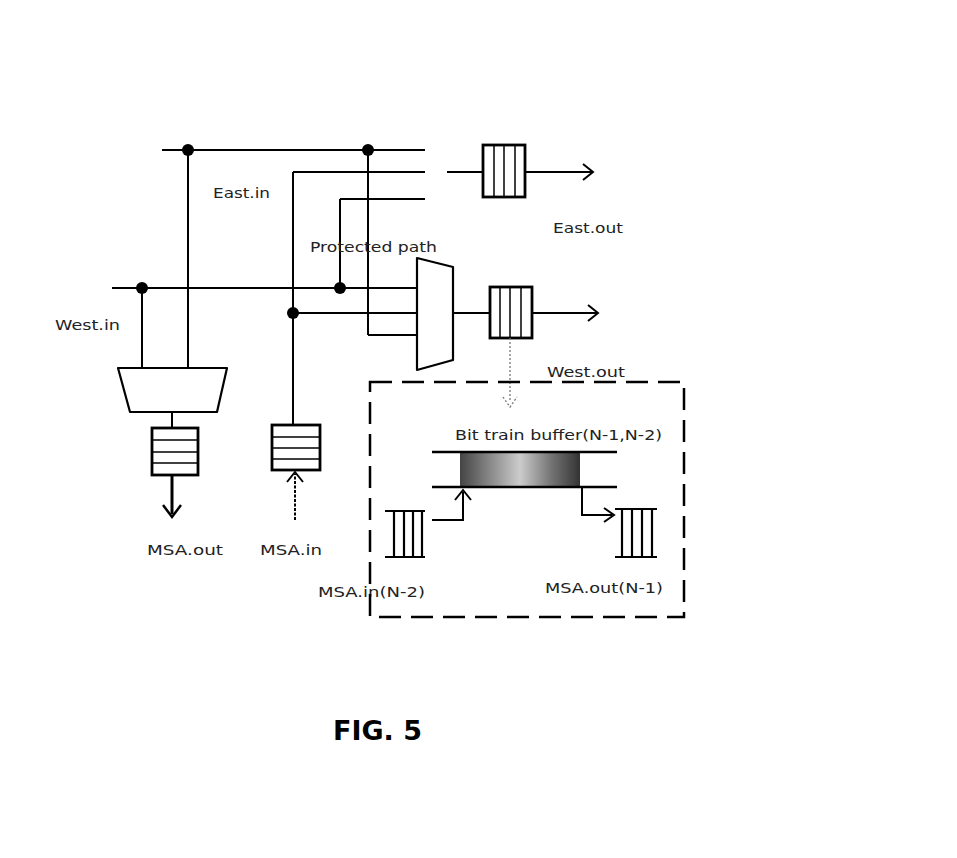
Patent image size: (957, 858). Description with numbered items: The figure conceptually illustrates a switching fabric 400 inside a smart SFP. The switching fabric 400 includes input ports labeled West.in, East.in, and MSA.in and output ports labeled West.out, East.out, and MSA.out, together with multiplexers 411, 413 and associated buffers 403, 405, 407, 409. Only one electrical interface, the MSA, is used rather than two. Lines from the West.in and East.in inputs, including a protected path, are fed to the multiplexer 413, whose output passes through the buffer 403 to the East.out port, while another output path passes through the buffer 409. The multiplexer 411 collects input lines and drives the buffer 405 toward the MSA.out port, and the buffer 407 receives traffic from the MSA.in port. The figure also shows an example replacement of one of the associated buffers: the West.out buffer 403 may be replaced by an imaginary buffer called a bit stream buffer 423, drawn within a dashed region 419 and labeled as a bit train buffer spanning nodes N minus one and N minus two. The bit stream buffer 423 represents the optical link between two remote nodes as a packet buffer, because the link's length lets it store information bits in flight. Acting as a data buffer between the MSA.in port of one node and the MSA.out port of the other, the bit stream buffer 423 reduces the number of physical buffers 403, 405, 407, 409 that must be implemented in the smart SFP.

The switching fabric 400 is at (645, 97).
The West.out buffer 403 is at (523, 287).
The buffer 405 is at (155, 458).
The buffer 407 is at (273, 470).
The buffer 409 is at (503, 145).
The multiplexer 411 is at (130, 408).
The multiplexer 413 is at (445, 265).
The West output / bit train buffer block 419 is at (668, 382).
The bit stream buffer 423 is at (603, 473).